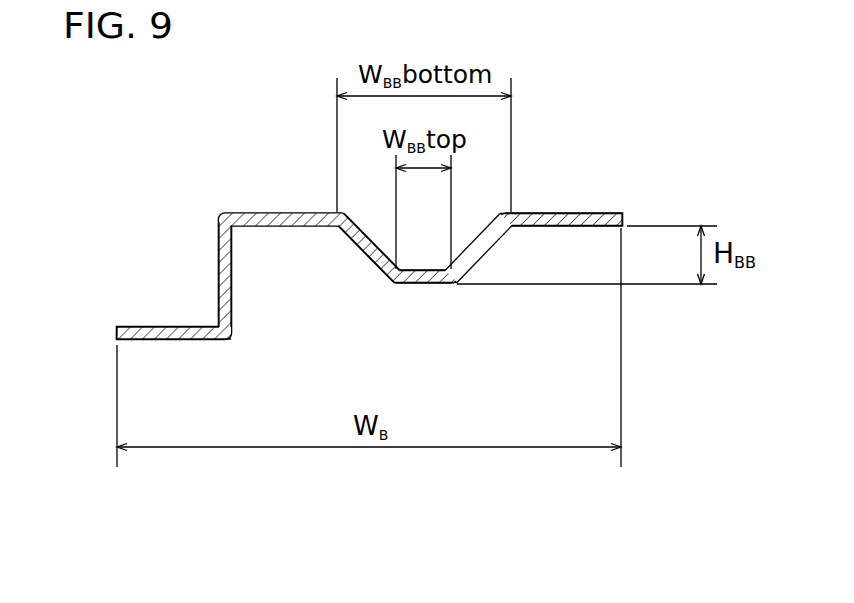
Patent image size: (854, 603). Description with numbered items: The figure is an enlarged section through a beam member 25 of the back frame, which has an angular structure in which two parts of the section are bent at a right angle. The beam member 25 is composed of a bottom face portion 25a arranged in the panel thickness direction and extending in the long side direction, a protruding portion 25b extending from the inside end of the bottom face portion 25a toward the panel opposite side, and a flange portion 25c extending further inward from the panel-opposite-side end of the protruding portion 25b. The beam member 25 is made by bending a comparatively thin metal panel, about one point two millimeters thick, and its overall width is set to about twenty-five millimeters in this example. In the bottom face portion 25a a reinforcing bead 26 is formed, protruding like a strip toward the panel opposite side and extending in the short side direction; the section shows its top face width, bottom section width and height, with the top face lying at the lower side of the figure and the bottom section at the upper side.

The beam member 25 is at (68, 133).
The bottom face portion 25a is at (573, 212).
The protruding portion 25b is at (232, 270).
The flange portion 25c is at (168, 340).
The reinforcing bead 26 is at (382, 273).